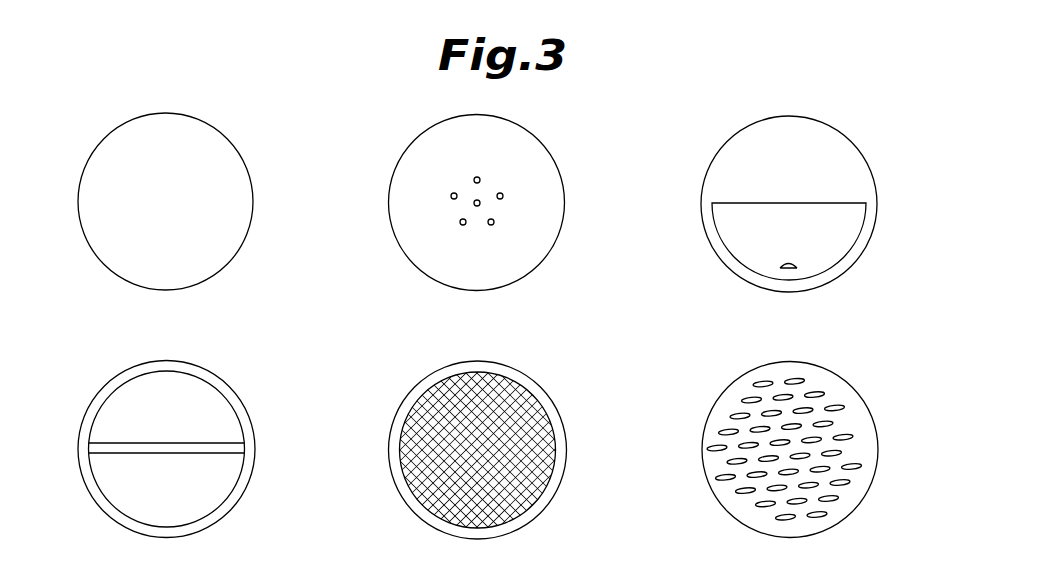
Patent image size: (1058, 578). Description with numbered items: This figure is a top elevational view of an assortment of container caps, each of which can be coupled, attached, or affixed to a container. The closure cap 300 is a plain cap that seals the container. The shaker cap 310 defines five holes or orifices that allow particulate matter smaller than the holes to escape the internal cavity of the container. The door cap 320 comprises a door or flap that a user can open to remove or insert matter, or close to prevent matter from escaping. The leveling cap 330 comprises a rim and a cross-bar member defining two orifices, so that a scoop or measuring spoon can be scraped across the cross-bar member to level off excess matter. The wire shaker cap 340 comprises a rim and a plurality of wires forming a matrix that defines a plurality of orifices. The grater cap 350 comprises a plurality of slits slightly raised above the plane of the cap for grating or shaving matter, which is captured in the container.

The closure cap 300 is at (220, 135).
The shaker cap 310 is at (545, 147).
The door cap 320 is at (777, 113).
The leveling cap 330 is at (223, 380).
The wire shaker cap 340 is at (533, 382).
The grater cap 350 is at (713, 407).